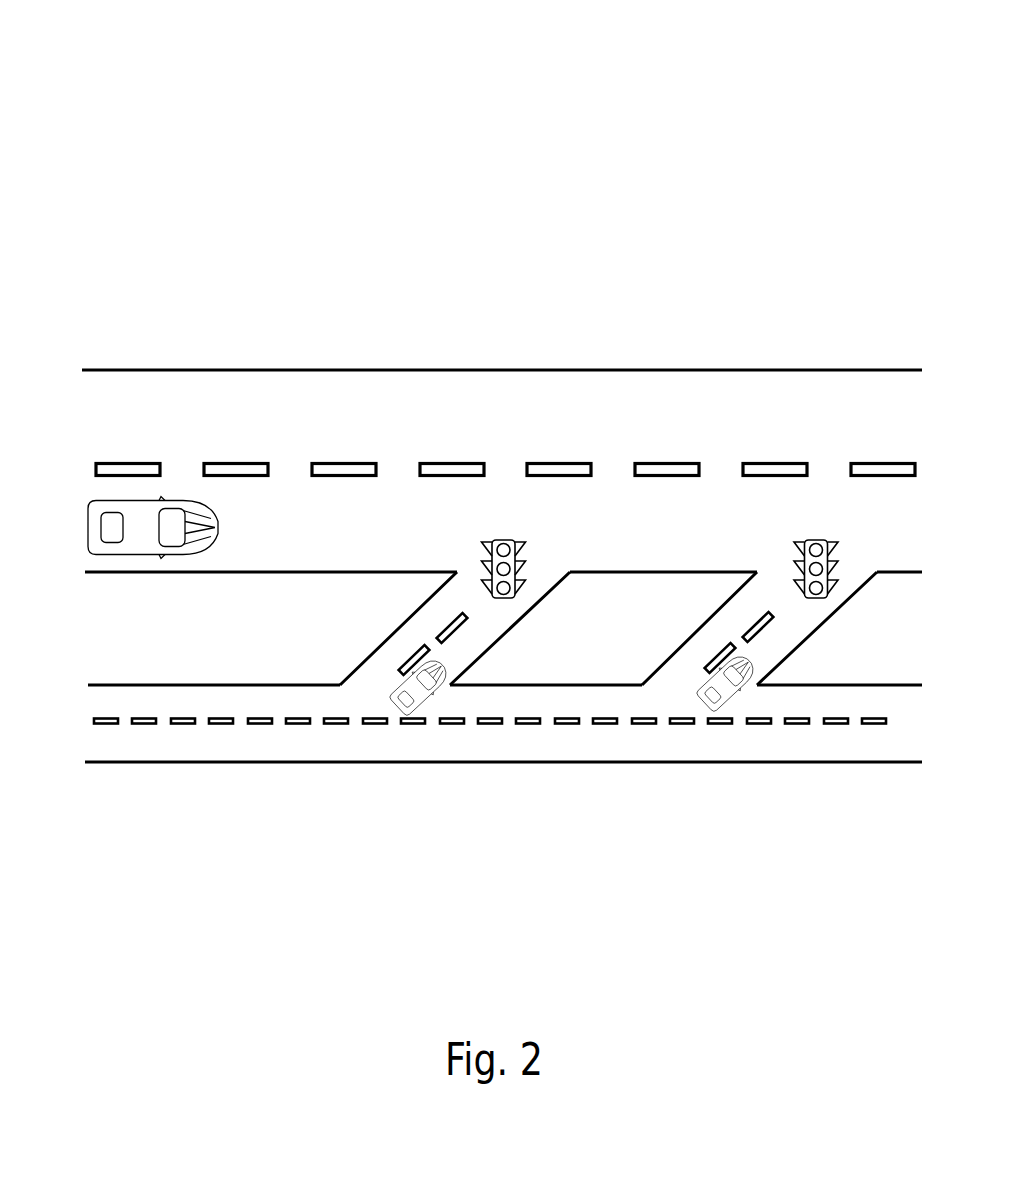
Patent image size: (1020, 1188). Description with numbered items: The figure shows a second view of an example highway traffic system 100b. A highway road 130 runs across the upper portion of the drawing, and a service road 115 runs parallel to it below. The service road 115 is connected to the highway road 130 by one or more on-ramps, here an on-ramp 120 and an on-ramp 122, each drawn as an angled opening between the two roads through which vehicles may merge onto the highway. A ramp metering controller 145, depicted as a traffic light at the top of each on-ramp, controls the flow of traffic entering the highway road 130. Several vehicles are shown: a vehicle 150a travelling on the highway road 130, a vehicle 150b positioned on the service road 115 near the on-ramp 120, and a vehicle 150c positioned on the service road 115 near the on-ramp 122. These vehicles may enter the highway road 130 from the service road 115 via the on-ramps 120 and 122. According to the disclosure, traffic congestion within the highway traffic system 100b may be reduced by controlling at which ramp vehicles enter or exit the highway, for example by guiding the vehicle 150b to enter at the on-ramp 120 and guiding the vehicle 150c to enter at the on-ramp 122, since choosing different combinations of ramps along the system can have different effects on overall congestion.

The highway traffic system 100b is at (146, 74).
The highway road 130 is at (172, 378).
The service road 115 is at (100, 697).
The on-ramp 120 is at (355, 672).
The on-ramp 122 is at (663, 672).
The ramp metering controller 145 is at (815, 599).
The vehicle 150a is at (108, 504).
The vehicle 150b is at (395, 705).
The vehicle 150c is at (700, 705).